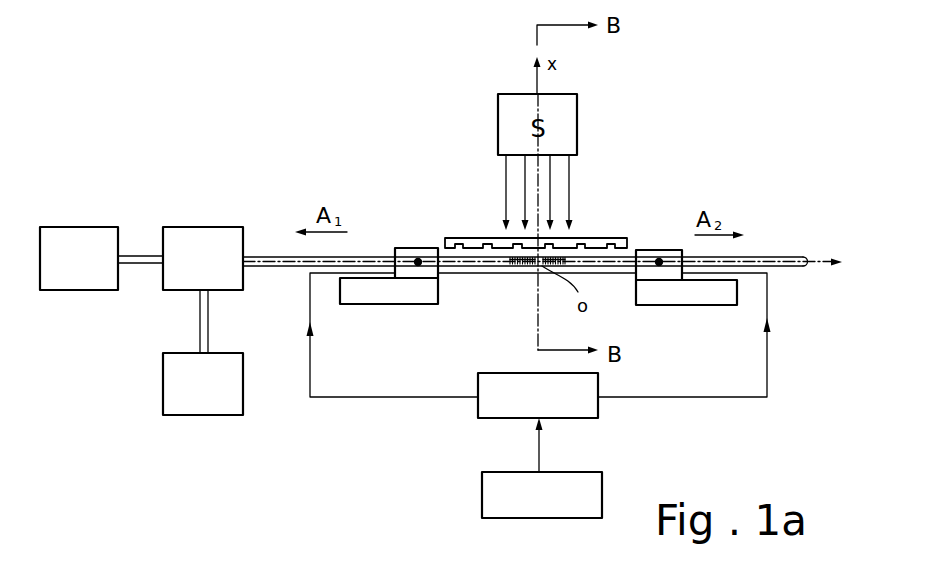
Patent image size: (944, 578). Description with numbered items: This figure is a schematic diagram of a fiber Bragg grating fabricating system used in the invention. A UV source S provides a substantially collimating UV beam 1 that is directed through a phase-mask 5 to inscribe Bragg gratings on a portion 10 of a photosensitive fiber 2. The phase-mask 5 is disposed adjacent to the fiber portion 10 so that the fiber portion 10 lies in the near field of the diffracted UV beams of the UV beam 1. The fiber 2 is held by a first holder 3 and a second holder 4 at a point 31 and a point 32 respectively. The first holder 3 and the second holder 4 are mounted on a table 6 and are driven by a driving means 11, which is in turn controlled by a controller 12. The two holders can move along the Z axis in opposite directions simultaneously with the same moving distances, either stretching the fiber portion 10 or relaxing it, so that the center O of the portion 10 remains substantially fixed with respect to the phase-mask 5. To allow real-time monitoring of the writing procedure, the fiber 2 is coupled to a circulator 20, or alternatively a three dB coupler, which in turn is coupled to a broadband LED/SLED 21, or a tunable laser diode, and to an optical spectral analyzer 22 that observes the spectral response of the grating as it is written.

The UV beam 1 is at (528, 192).
The photosensitive fiber 2 is at (760, 252).
The first holder 3 is at (433, 248).
The second holder 4 is at (638, 250).
The phase-mask 5 is at (587, 238).
The table 6 is at (408, 290).
The fiber portion 10 is at (513, 265).
The driving means 11 is at (539, 345).
The controller 12 is at (542, 468).
The circulator 20 is at (180, 290).
The broadband LED/SLED 21 is at (79, 258).
The OSA 22 is at (203, 384).
The point 31 is at (418, 262).
The point 32 is at (659, 262).